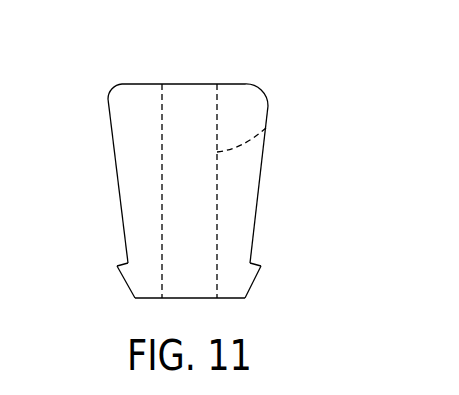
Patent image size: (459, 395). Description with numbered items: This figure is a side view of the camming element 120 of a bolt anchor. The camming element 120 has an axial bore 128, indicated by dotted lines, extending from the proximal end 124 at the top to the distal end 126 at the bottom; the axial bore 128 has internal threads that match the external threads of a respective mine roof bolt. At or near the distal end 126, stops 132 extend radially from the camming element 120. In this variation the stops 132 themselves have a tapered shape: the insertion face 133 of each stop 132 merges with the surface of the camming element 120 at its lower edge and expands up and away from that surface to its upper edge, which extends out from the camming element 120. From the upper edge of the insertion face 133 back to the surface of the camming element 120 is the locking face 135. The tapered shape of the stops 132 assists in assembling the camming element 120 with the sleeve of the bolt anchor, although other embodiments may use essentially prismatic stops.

The camming element 120 is at (180, 196).
The proximal end 124 is at (111, 91).
The distal end 126 is at (137, 299).
The axial bore 128 is at (266, 128).
The stop 132 is at (256, 264).
The insertion face 133 is at (257, 280).
The locking face 135 is at (127, 262).